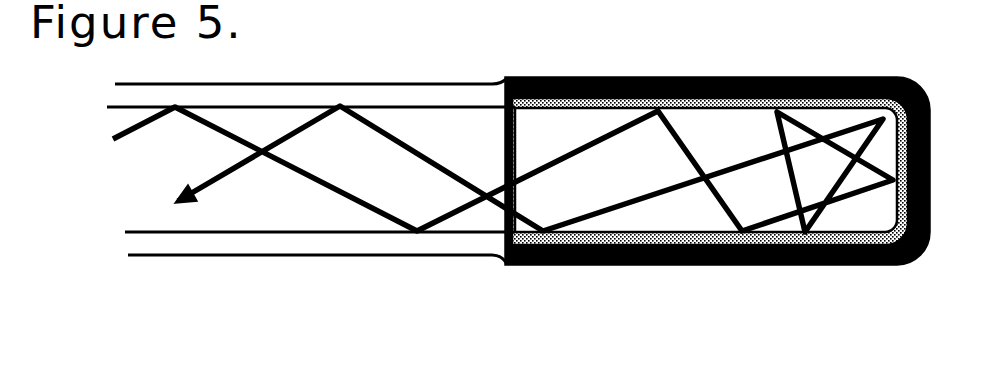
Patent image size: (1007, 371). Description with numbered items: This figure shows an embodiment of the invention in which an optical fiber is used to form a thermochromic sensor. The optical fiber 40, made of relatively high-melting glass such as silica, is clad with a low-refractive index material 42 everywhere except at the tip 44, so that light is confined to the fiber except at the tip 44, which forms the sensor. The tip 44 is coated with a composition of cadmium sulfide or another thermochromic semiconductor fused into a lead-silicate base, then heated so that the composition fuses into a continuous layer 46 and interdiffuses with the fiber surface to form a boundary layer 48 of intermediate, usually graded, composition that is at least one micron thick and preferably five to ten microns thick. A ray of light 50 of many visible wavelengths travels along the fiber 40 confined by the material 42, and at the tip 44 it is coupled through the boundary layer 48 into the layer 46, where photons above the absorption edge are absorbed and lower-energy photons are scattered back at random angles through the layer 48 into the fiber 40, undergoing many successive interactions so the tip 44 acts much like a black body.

The optical fiber 40 is at (155, 163).
The low-refractive index material 42 is at (143, 243).
The tip 44 is at (674, 217).
The continuous layer 46 is at (907, 272).
The boundary layer 48 is at (603, 250).
The ray of light 50 is at (338, 192).